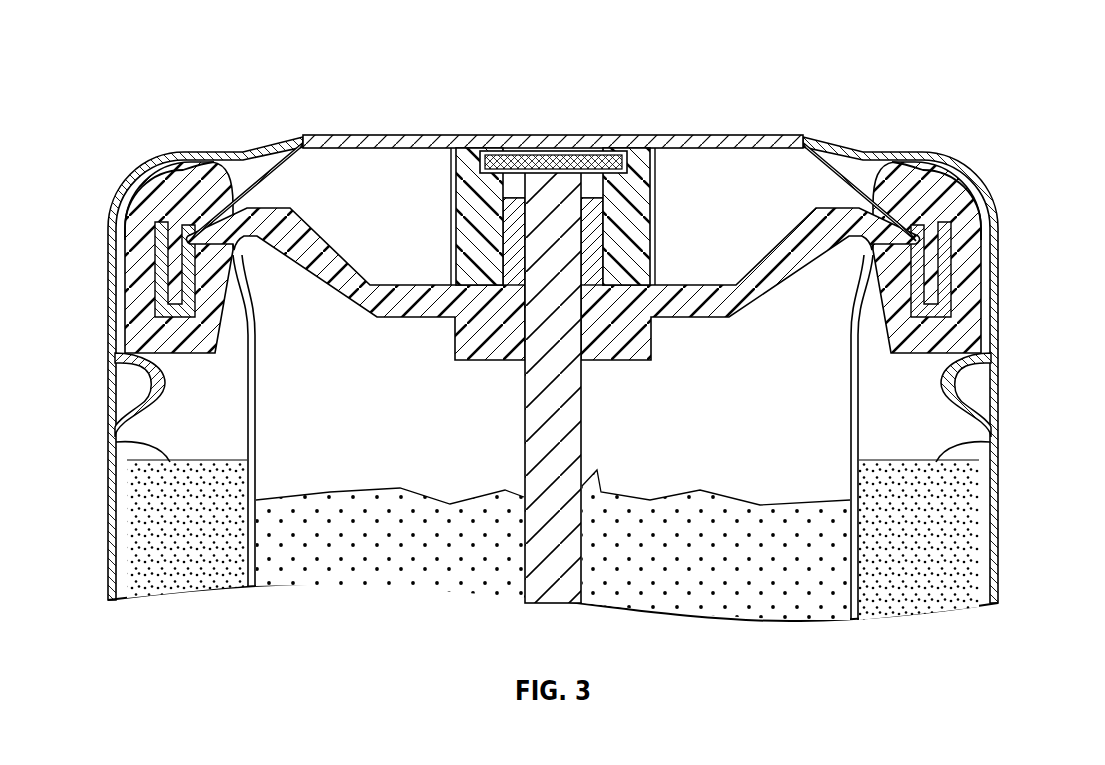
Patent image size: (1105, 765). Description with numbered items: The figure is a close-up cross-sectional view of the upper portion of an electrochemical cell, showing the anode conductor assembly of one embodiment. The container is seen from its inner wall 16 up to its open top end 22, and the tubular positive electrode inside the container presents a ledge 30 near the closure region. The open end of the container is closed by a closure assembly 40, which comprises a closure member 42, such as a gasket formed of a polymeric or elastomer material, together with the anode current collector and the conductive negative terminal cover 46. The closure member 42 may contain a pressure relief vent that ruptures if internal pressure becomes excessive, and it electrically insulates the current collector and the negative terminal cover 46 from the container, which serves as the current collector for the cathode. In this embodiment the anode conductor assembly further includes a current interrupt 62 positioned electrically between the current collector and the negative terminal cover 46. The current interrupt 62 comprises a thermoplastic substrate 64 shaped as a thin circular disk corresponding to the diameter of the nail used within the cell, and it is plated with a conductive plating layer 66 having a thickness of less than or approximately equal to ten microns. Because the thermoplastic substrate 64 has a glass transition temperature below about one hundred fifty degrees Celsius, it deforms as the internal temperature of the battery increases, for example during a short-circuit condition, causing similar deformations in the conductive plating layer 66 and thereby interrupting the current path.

The inner wall 16 is at (938, 434).
The top end 22 is at (863, 152).
The ledge 30 is at (130, 443).
The closure assembly 40 is at (717, 137).
The closure member 42 is at (318, 243).
The negative terminal cover 46 is at (603, 137).
The current interrupt 62 is at (455, 118).
The thermoplastic substrate 64 is at (498, 138).
The conductive plating layer 66 is at (647, 137).